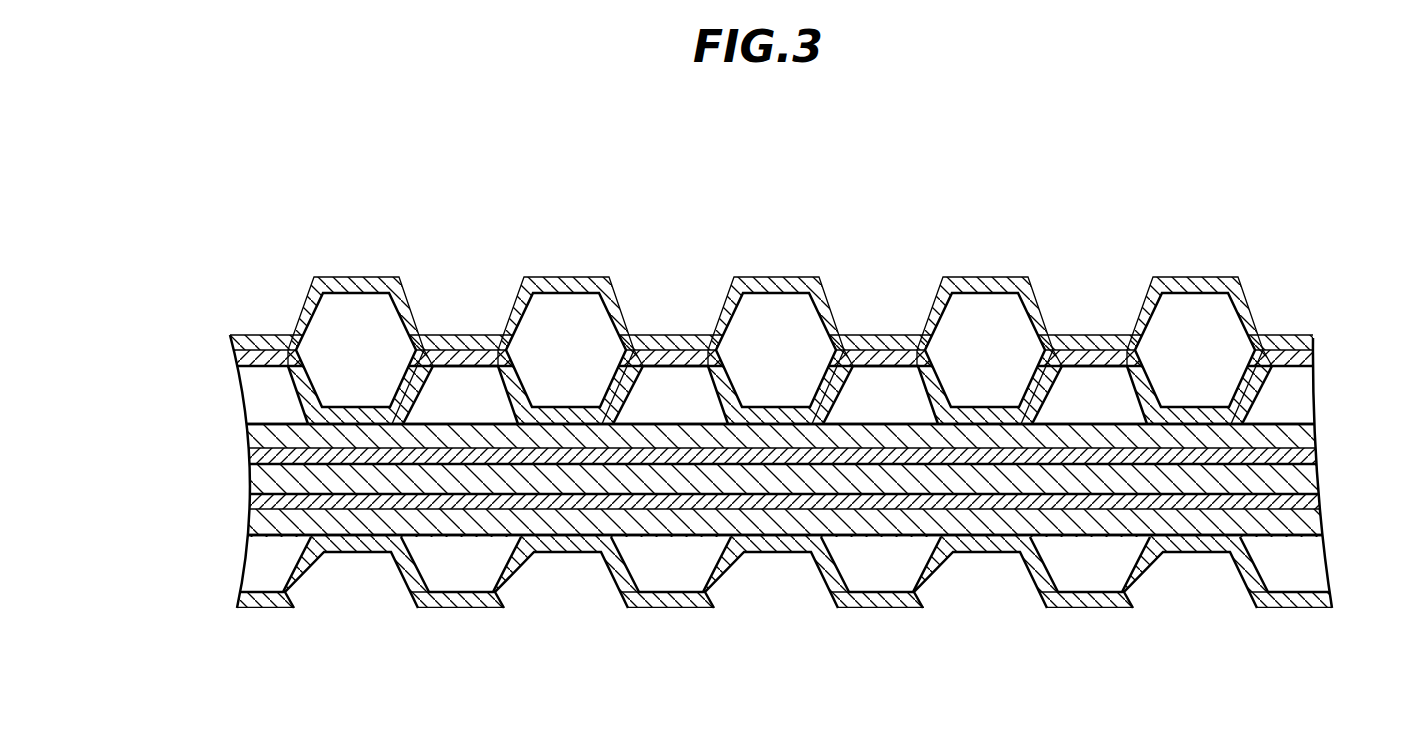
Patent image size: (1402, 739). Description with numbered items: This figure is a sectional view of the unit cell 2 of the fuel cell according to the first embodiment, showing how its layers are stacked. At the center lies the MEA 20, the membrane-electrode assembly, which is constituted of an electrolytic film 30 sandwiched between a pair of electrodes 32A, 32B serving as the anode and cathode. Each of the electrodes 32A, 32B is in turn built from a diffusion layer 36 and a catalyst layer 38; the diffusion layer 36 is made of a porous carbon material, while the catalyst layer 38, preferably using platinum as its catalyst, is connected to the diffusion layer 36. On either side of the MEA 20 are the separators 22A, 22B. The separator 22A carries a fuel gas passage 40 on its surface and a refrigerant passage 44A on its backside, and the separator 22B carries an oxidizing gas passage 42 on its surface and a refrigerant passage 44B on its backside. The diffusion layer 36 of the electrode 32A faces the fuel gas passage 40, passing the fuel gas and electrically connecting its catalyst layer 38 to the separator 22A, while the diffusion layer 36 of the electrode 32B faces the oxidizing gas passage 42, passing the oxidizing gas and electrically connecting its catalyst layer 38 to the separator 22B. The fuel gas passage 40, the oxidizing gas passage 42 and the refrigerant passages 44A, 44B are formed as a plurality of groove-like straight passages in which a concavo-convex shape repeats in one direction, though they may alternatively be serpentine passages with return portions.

The unit cell 2 is at (92, 353).
The MEA 20 is at (1340, 425).
The separator 22A is at (233, 360).
The separator 22B is at (247, 333).
The electrolytic film 30 is at (262, 480).
The electrode 32A is at (155, 416).
The electrode 32B is at (155, 523).
The diffusion layer 36 is at (256, 438).
The catalyst layer 38 is at (263, 455).
The fuel gas passage 40 is at (1107, 407).
The oxidizing gas passage 42 is at (1107, 576).
The refrigerant passage 44A is at (1221, 395).
The refrigerant passage 44B is at (1221, 598).